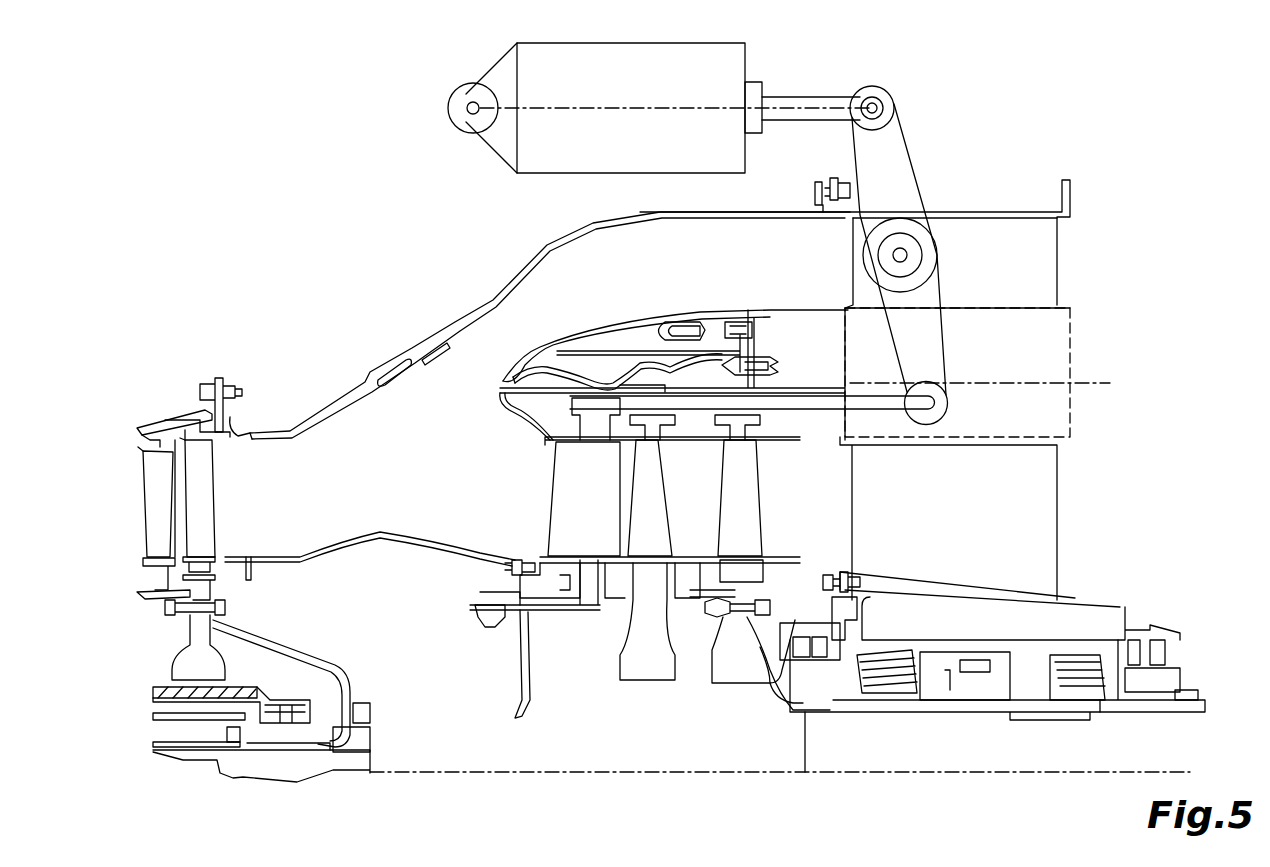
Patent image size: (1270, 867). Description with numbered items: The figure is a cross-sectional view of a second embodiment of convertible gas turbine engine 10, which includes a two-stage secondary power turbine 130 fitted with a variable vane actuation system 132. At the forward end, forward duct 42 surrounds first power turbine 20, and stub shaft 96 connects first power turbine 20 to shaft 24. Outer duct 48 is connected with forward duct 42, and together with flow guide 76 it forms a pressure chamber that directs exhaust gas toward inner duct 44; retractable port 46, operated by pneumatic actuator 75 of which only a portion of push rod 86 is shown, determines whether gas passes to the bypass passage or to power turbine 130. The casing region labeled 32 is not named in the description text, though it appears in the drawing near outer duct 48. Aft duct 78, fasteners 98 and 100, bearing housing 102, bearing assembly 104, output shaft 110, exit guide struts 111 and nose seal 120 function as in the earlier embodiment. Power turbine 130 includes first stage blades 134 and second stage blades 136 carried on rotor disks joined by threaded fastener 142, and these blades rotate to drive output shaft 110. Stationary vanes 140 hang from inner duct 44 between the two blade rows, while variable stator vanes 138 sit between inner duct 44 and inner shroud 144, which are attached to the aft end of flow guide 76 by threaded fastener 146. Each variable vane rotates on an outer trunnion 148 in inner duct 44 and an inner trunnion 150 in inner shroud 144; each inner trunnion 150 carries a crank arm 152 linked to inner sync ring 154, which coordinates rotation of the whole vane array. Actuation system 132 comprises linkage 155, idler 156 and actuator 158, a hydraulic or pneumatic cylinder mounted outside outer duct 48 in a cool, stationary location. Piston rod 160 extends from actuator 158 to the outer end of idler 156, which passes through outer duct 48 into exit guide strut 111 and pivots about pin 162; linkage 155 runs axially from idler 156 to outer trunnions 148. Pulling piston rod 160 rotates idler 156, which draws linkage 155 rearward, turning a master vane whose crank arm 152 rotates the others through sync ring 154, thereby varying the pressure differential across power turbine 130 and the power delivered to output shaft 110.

The convertible gas turbine engine 10 is at (258, 267).
The first power turbine 20 is at (138, 486).
The shaft 24 is at (295, 762).
The combustor casing 32 is at (562, 232).
The forward duct 42 is at (160, 428).
The inner duct 44 is at (605, 320).
The retractable port 46 is at (537, 352).
The outer duct 48 is at (518, 270).
The pneumatic actuator 75 is at (725, 304).
The flow guide 76 is at (300, 550).
The aft duct 78 is at (1020, 210).
The push rod 86 is at (775, 362).
The stub shaft 96 is at (300, 665).
The fastener 98 is at (740, 322).
The fastener 100 is at (826, 185).
The bearing housing 102 is at (1087, 600).
The bearing assembly 104 is at (1147, 690).
The output shaft 110 is at (1175, 705).
The exit guide strut 111 is at (1031, 249).
The nose seal 120 is at (407, 378).
The two-stage secondary power turbine 130 is at (638, 700).
The variable vane actuation system 132 is at (916, 117).
The first stage blades 134 is at (664, 548).
The second stage blades 136 is at (756, 541).
The variable stator vanes 138 is at (610, 506).
The stationary vanes 140 is at (703, 473).
The threaded fastener 142 is at (717, 618).
The inner shroud 144 is at (547, 555).
The threaded fastener 146 is at (508, 566).
The outer trunnions 148 is at (595, 430).
The inner trunnions 150 is at (590, 595).
The crank arm 152 is at (540, 625).
The inner sync ring 154 is at (500, 603).
The linkage 155 is at (783, 402).
The idler 156 is at (910, 330).
The actuator 158 is at (768, 53).
The piston rod 160 is at (822, 95).
The pin 162 is at (905, 250).